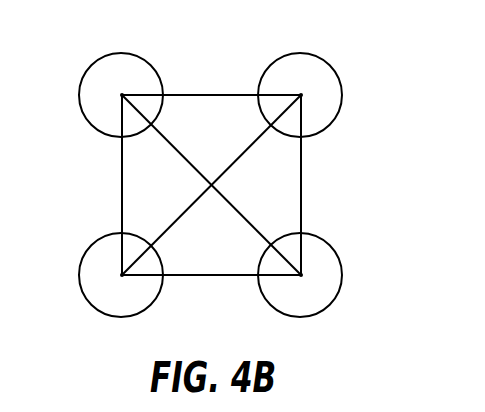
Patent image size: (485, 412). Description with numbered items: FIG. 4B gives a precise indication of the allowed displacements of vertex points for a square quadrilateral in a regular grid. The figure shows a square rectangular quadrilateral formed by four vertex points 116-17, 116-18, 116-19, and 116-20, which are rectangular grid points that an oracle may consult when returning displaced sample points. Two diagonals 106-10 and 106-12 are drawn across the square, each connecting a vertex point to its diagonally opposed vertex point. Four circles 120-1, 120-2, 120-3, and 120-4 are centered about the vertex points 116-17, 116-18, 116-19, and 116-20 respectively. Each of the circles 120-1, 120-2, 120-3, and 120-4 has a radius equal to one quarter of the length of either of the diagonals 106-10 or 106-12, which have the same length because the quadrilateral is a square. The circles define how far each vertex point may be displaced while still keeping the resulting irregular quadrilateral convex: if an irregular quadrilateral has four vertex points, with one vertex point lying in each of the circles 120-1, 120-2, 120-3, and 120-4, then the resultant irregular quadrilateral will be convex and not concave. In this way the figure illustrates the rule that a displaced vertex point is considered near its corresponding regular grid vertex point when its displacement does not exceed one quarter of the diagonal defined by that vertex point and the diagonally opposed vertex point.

The circle 120-1 is at (120, 52).
The circle 120-2 is at (300, 52).
The circle 120-3 is at (121, 318).
The circle 120-4 is at (301, 318).
The vertex point 116-17 is at (122, 88).
The vertex point 116-18 is at (301, 88).
The vertex point 116-19 is at (122, 278).
The vertex point 116-20 is at (301, 278).
The diagonal 106-10 is at (253, 143).
The diagonal 106-12 is at (250, 220).